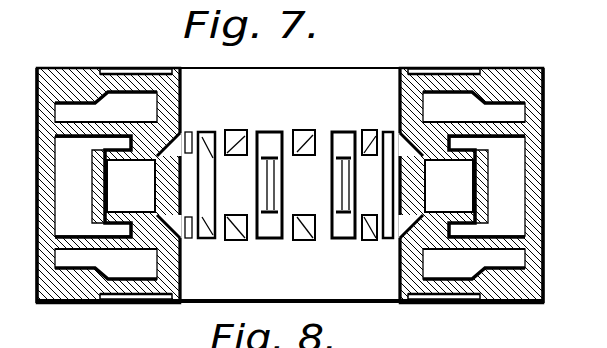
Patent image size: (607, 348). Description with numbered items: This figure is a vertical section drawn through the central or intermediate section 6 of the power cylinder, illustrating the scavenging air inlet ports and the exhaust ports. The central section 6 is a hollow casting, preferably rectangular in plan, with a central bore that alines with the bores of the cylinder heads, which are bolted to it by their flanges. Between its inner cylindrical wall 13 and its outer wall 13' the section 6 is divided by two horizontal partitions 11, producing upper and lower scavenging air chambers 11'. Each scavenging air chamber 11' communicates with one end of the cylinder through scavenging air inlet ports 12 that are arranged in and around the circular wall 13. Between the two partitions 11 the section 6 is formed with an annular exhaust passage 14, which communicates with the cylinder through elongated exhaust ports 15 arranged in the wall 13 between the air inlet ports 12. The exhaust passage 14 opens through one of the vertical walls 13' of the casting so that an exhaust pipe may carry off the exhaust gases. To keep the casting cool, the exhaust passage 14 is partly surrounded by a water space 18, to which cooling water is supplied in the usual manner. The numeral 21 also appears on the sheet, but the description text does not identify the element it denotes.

The central section 6 is at (290, 169).
The horizontal partition 11 is at (297, 208).
The scavenging air chamber 11' is at (290, 191).
The scavenging air inlet port 12 is at (228, 137).
The inner cylindrical wall 13 is at (322, 185).
The outer wall 13' is at (302, 206).
The annular exhaust passage 14 is at (290, 185).
The exhaust port 15 is at (250, 183).
The water space 18 is at (290, 186).
The housing 21 is at (595, 65).